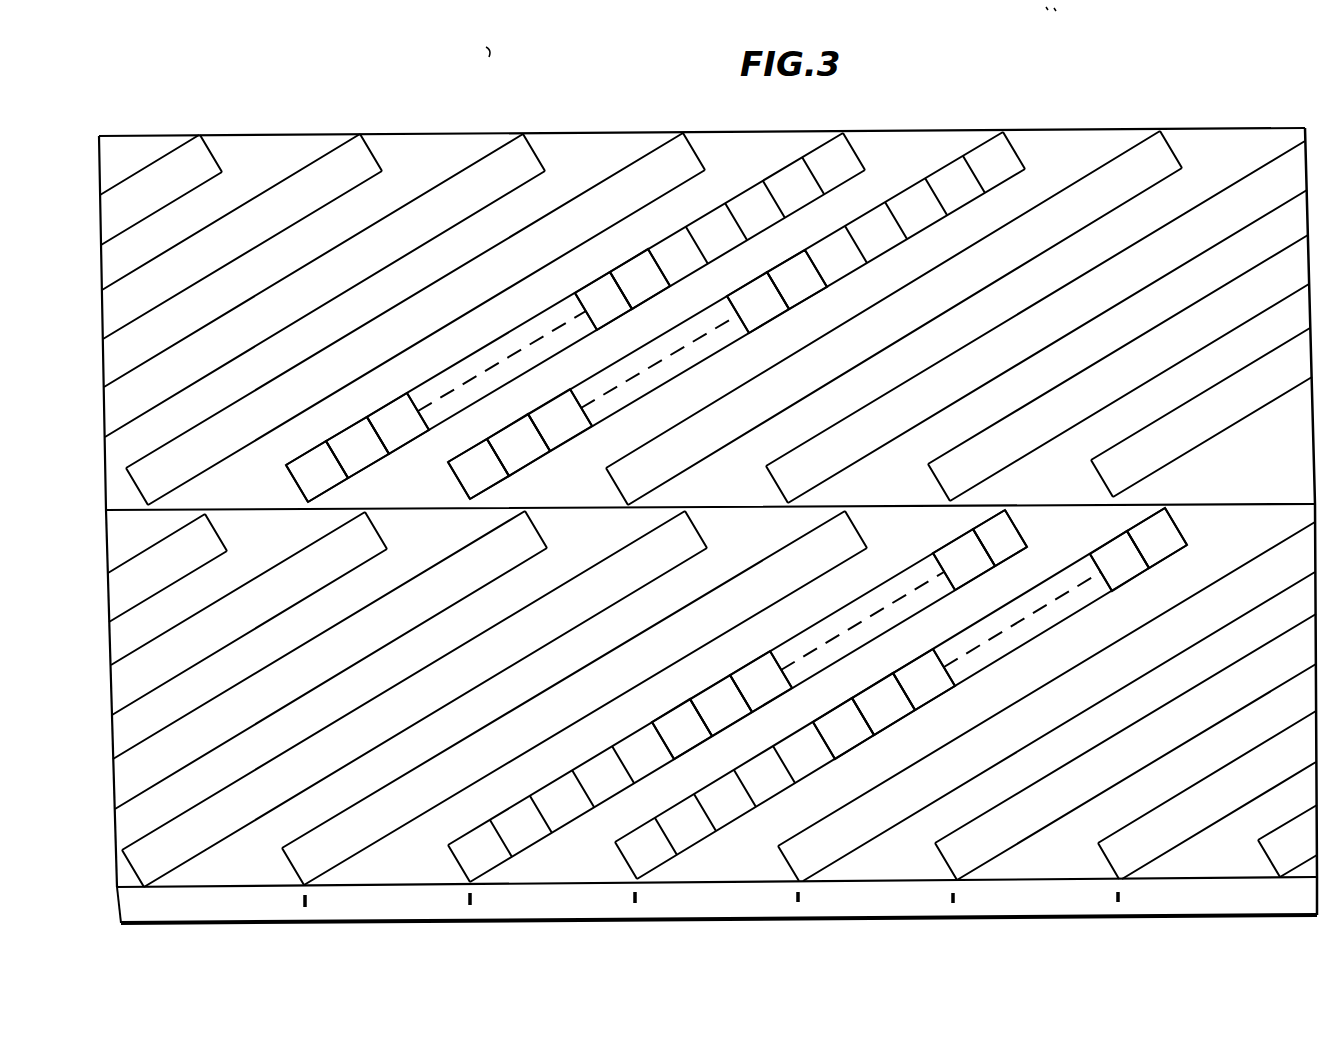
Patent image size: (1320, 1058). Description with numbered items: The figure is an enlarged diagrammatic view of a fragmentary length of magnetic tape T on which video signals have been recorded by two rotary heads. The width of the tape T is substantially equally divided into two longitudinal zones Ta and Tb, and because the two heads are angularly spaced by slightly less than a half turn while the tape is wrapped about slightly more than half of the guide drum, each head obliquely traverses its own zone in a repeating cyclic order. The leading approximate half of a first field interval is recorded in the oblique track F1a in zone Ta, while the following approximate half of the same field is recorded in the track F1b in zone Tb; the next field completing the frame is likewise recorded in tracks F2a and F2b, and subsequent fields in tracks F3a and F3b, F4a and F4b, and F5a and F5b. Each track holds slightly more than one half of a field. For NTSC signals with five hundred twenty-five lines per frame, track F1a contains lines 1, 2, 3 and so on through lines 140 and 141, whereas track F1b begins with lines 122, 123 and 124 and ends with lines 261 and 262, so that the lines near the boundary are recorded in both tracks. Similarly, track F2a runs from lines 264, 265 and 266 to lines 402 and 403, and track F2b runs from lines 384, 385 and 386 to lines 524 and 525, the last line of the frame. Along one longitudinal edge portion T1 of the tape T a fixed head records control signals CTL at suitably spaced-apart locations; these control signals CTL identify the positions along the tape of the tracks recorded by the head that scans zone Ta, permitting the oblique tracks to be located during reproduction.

The magnetic tape T is at (601, 134).
The longitudinal zone Tb is at (98, 510).
The longitudinal zone Ta is at (103, 917).
The longitudinal edge portion T1 is at (507, 910).
The control signals CTL is at (305, 897).
The track F1a is at (977, 680).
The track F2a is at (847, 663).
The track F3a is at (725, 632).
The track F4a is at (577, 629).
The track F5a is at (405, 637).
The track F1b is at (725, 350).
The track F2b is at (564, 357).
The track F3b is at (490, 303).
The track F4b is at (410, 304).
The track F5b is at (322, 310).
The line 1 is at (843, 728).
The line 2 is at (883, 704).
The line 3 is at (924, 679).
The line 140 is at (1119, 561).
The line 141 is at (1157, 538).
The line 264 is at (682, 729).
The line 265 is at (721, 705).
The line 266 is at (761, 681).
The line 402 is at (964, 559).
The line 403 is at (1000, 538).
The line 122 is at (478, 469).
The line 123 is at (518, 445).
The line 124 is at (560, 420).
The line 261 is at (758, 302).
The line 262 is at (797, 279).
The line 384 is at (317, 471).
The line 385 is at (357, 447).
The line 386 is at (398, 423).
The line 524 is at (603, 301).
The line 525 is at (640, 279).